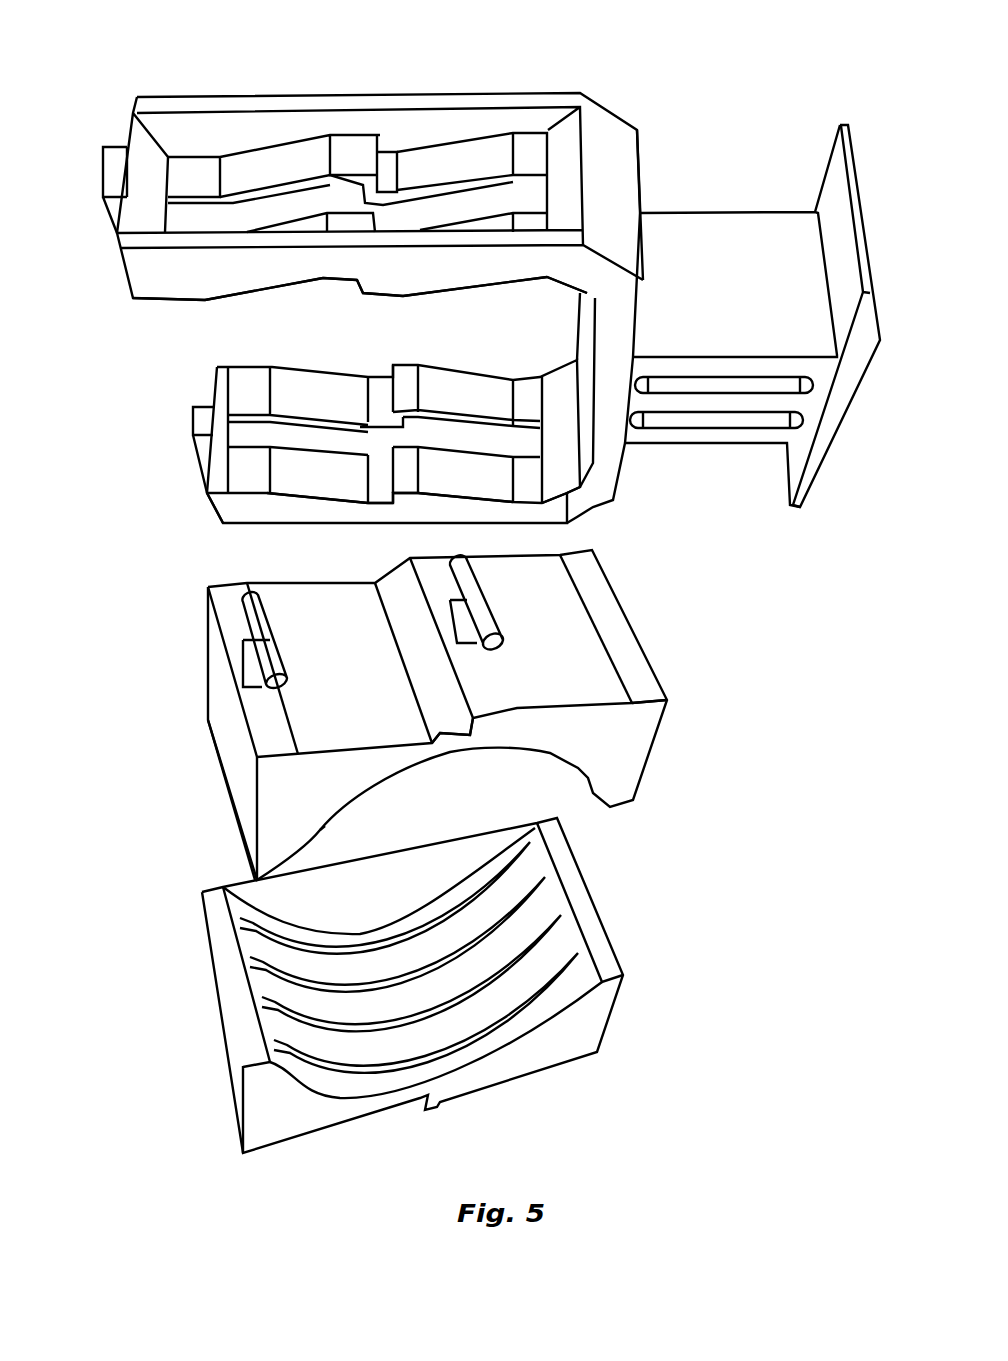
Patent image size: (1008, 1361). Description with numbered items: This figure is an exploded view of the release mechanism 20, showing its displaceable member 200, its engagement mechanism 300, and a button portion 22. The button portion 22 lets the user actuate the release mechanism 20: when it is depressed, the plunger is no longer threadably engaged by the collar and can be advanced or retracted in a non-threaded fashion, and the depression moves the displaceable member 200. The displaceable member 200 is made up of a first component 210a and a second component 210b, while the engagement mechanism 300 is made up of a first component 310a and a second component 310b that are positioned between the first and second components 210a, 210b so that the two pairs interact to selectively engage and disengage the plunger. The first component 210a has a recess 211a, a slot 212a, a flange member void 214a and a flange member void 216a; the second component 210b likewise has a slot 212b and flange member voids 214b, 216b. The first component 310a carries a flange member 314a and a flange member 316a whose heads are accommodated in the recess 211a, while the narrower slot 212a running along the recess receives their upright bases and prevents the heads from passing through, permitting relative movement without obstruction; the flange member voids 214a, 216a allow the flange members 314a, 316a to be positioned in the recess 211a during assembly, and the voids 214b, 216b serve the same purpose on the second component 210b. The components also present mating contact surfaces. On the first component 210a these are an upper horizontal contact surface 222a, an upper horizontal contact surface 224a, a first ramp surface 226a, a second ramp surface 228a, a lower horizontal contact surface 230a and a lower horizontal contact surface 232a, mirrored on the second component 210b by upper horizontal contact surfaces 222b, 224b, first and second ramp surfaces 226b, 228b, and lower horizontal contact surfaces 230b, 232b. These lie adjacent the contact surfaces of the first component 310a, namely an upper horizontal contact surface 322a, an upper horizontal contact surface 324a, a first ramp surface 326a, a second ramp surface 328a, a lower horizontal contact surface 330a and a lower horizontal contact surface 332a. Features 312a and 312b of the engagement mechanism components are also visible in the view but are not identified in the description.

The release mechanism 20 is at (735, 276).
The button portion 22 is at (868, 330).
The displaceable member 200 is at (379, 292).
The first component 210a is at (354, 177).
The second component 210b is at (384, 453).
The recess 211a is at (316, 128).
The slot 212a is at (463, 200).
The slot 212b is at (280, 432).
The flange member void 214a is at (193, 165).
The flange member void 214b is at (228, 375).
The flange member void 216a is at (385, 177).
The flange member void 216b is at (383, 372).
The upper horizontal contact surface 222a is at (163, 300).
The upper horizontal contact surface 222b is at (245, 490).
The upper horizontal contact surface 224a is at (373, 300).
The upper horizontal contact surface 224b is at (403, 488).
The first ramp surface 226a is at (255, 293).
The first ramp surface 226b is at (315, 495).
The second ramp surface 228a is at (450, 287).
The second ramp surface 228b is at (500, 497).
The lower horizontal contact surface 230a is at (337, 278).
The lower horizontal contact surface 230b is at (376, 498).
The lower horizontal contact surface 232a is at (533, 280).
The lower horizontal contact surface 232b is at (537, 485).
The engagement mechanism 300 is at (422, 851).
The first component 310a is at (422, 717).
The second component 310b is at (377, 985).
The curved seat 312a is at (340, 838).
The curved ribs 312b is at (487, 1046).
The flange member 314a is at (262, 647).
The flange member 316a is at (490, 612).
The upper horizontal contact surface 322a is at (227, 615).
The upper horizontal contact surface 324a is at (507, 723).
The first ramp surface 326a is at (374, 689).
The second ramp surface 328a is at (581, 662).
The lower horizontal contact surface 330a is at (453, 737).
The lower horizontal contact surface 332a is at (640, 664).